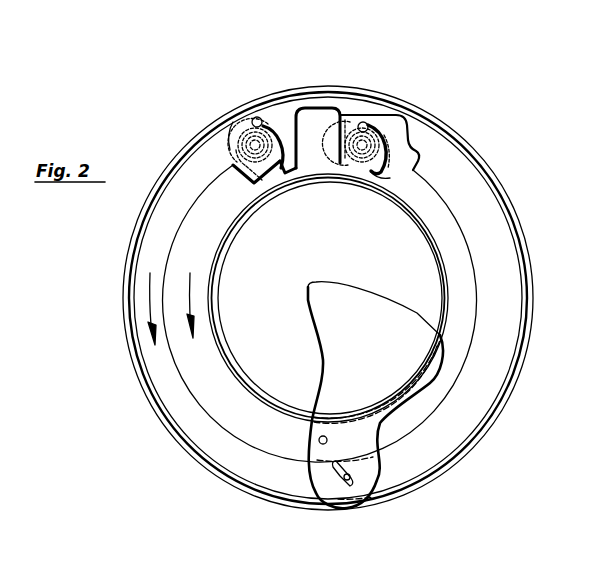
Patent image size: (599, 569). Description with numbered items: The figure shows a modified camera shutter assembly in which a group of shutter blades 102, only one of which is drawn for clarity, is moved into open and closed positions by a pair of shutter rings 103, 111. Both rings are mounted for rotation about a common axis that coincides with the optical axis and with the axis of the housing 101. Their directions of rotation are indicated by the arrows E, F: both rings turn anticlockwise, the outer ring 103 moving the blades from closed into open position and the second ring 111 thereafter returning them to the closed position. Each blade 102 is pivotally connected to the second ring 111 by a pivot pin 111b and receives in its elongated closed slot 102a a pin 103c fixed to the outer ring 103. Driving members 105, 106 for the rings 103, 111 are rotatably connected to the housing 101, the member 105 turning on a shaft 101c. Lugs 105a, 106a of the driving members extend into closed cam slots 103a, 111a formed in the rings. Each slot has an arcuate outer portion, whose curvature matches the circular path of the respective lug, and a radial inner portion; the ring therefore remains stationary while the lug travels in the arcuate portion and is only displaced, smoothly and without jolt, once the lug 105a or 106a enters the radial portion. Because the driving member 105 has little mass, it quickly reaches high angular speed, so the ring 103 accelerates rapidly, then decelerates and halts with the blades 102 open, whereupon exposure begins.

The housing 101 is at (332, 86).
The shaft 101c is at (238, 132).
The shutter blade 102 is at (325, 300).
The elongated closed slot 102a is at (337, 467).
The shutter ring 103 is at (173, 393).
The cam slot 103a is at (286, 160).
The pin 103c is at (350, 481).
The driving member 105 is at (244, 110).
The lug 105a is at (259, 117).
The driving member 106 is at (410, 112).
The lug 106a is at (364, 122).
The shutter ring 111 is at (231, 379).
The cam slot 111a is at (378, 178).
The pivot pin 111b is at (319, 440).
The arrow E is at (148, 318).
The arrow F is at (193, 305).